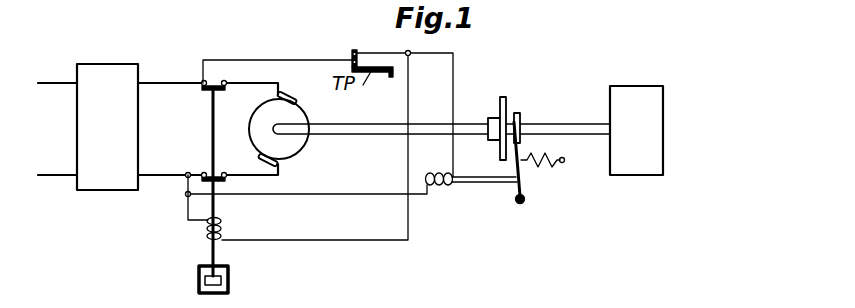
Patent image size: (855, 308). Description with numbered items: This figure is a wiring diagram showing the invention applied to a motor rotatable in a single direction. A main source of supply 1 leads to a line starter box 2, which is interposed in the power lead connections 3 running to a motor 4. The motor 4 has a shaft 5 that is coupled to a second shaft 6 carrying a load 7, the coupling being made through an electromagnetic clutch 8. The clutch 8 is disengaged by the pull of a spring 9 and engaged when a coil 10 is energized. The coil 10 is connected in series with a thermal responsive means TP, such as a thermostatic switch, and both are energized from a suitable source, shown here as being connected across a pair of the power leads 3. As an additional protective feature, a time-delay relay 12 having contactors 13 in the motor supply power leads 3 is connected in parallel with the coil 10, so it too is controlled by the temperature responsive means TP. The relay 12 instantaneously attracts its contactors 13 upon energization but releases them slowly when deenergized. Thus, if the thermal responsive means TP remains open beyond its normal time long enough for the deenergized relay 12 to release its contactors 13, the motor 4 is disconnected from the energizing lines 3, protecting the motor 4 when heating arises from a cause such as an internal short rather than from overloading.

The main source of supply 1 is at (57, 167).
The line starter box 2 is at (110, 65).
The power lead connections 3 is at (171, 173).
The motor 4 is at (300, 101).
The shaft 5 is at (444, 123).
The shaft 6 is at (557, 123).
The load 7 is at (665, 120).
The electromagnetic clutch 8 is at (506, 104).
The spring 9 is at (541, 160).
The coil 10 is at (445, 187).
The time-delay relay 12 is at (217, 243).
The contactors 13 is at (193, 112).